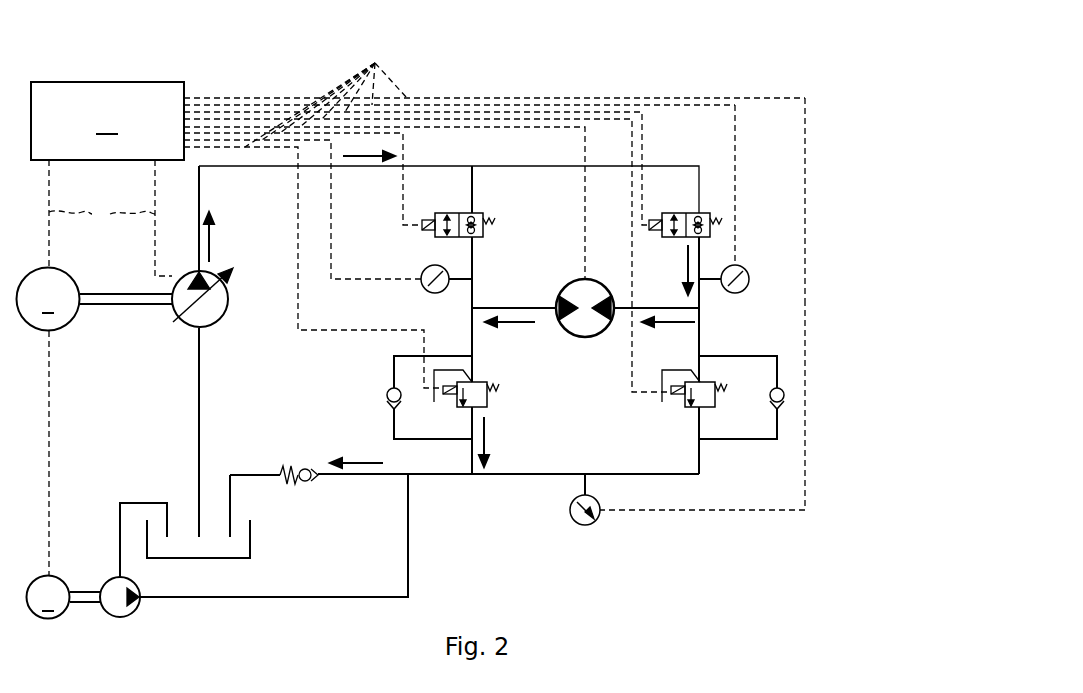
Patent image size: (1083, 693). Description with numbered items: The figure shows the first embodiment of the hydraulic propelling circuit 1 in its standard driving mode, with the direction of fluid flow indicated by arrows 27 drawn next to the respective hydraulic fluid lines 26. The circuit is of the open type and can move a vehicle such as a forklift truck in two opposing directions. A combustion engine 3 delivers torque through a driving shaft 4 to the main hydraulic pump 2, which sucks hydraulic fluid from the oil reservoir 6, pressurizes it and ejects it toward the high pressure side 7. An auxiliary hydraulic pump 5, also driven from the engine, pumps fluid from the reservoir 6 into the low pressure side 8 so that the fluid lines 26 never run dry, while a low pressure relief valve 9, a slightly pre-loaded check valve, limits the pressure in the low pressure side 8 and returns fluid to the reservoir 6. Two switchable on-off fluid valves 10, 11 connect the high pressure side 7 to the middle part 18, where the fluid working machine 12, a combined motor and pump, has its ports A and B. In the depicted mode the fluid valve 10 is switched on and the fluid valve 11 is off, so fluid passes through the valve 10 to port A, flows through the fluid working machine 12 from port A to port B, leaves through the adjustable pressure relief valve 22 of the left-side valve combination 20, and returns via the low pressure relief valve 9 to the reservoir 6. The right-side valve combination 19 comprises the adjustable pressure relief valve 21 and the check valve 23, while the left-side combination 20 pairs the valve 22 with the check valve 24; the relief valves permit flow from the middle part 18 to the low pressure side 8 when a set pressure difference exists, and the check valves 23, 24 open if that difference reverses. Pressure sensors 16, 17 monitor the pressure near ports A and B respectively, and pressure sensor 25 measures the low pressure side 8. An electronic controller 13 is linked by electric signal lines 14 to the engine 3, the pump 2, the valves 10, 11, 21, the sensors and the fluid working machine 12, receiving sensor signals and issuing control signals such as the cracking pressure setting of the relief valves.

The hydraulic propelling circuit 1 is at (880, 150).
The main hydraulic pump 2 is at (224, 318).
The combustion engine 3 is at (48, 443).
The driving shaft 4 is at (111, 290).
The auxiliary hydraulic pump 5 is at (133, 615).
The oil reservoir 6 is at (252, 537).
The high pressure side 7 is at (765, 209).
The low pressure side 8 is at (714, 533).
The low pressure relief valve 9 is at (292, 465).
The fluid valve 10 is at (707, 212).
The fluid valve 11 is at (486, 212).
The fluid working machine 12 is at (588, 339).
The electronic controller 13 is at (107, 121).
The electric signal lines 14 is at (427, 305).
The pressure sensor 16 is at (738, 294).
The pressure sensor 17 is at (440, 294).
The middle part 18 is at (765, 279).
The valve combination 19 is at (738, 441).
The valve combination 20 is at (393, 424).
The adjustable pressure relief valve 21 is at (718, 408).
The adjustable pressure relief valve 22 is at (490, 400).
The check valve 23 is at (785, 392).
The check valve 24 is at (386, 392).
The pressure sensor 25 is at (587, 527).
The hydraulic fluid lines 26 is at (278, 168).
The arrows 27 is at (364, 167).